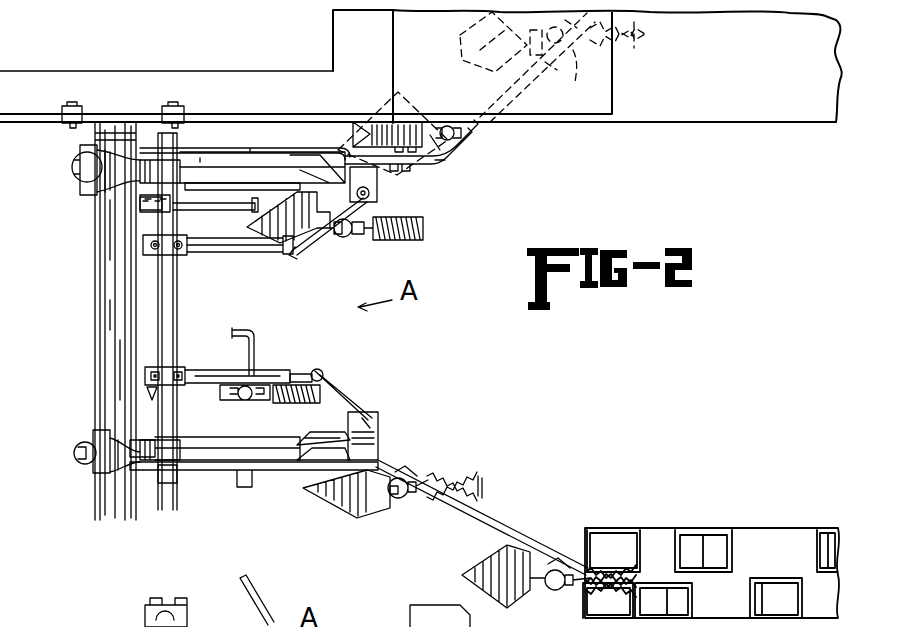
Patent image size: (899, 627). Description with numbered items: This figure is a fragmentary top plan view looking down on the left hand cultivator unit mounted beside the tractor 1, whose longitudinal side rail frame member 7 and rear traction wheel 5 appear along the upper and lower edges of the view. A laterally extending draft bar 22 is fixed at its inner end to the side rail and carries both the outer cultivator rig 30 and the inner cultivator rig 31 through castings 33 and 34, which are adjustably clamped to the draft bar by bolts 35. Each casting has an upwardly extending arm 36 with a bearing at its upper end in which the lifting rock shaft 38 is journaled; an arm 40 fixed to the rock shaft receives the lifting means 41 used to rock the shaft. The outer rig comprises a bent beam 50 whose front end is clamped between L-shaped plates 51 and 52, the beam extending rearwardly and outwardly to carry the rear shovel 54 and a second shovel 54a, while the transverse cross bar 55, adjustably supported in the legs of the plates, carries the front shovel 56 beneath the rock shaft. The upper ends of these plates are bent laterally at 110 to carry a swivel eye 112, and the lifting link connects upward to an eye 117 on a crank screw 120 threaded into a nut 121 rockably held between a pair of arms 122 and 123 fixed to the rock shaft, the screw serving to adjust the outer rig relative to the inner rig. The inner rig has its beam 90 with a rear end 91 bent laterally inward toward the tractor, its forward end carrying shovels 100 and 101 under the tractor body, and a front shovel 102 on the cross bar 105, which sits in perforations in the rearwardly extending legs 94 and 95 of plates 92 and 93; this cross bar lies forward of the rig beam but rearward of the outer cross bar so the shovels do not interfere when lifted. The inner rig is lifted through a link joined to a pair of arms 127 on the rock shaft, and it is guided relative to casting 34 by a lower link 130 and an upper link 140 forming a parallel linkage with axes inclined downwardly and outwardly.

The tractor 1 is at (323, 31).
The frame member 7 is at (137, 82).
The draft bar 22 is at (116, 317).
The lifting rock shaft 38 is at (168, 336).
The bolt 35 is at (83, 175).
The arm 36 is at (112, 180).
The casting 34 is at (120, 198).
The casting 33 is at (120, 470).
The lower link 130 is at (262, 150).
The upper link 140 is at (310, 150).
The plate 92 is at (338, 148).
The inner rig beam 90 is at (455, 148).
The inner cultivator rig 31 is at (444, 167).
The rearwardly extending leg 94 is at (393, 120).
The cross bar 105 is at (389, 130).
The shovel 100 is at (450, 90).
The shovel 101 is at (479, 45).
The rear end 91 is at (576, 60).
The rearwardly extending leg 95 is at (380, 188).
The lifting means 41 is at (252, 214).
The arm 40 is at (160, 212).
The arm 127 is at (255, 248).
The plate 93 is at (294, 210).
The front shovel 102 is at (300, 252).
The crank screw 120 is at (242, 325).
The arm 122 is at (220, 387).
The arm 123 is at (252, 375).
The nut 121 is at (292, 372).
The eye 117 is at (322, 362).
The swivel eye 112 is at (368, 418).
The laterally bent end 110 is at (370, 420).
The L-shaped plate 52 is at (318, 440).
The front shovel 56 is at (173, 410).
The cross bar 55 is at (254, 480).
The L-shaped plate 51 is at (335, 494).
The shovel 54a is at (372, 506).
The outer cultivator rig 30 is at (419, 519).
The beam 50 is at (488, 505).
The rear shovel 54 is at (488, 562).
The rear traction wheel 5 is at (752, 535).